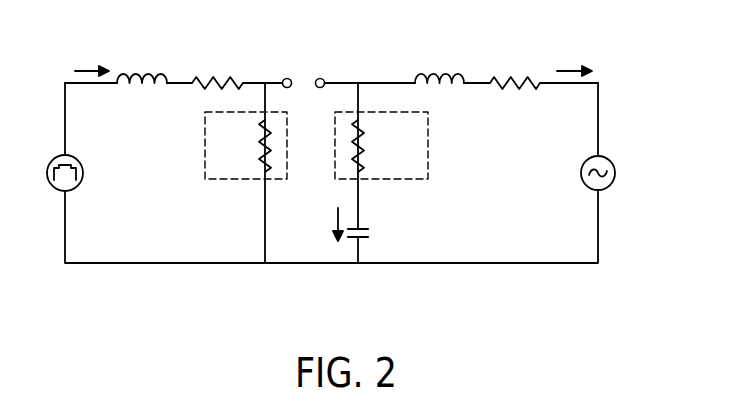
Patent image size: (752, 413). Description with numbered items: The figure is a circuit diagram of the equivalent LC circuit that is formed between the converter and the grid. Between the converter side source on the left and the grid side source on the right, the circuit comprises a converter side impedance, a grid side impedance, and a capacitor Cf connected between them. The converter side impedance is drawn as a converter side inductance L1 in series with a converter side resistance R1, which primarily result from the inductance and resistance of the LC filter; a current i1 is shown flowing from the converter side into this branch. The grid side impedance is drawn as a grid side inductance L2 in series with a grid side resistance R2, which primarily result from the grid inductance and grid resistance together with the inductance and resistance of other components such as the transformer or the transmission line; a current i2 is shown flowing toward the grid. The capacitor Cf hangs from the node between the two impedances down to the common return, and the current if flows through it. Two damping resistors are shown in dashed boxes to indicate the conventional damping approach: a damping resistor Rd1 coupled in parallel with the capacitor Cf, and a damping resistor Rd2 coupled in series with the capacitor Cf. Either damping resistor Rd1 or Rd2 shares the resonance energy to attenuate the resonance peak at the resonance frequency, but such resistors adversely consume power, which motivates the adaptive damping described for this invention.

The converter side inductance L1 is at (142, 64).
The converter side resistance R1 is at (217, 67).
The grid side inductance L2 is at (439, 64).
The grid side resistance R2 is at (515, 67).
The damping resistor Rd2 is at (246, 145).
The damping resistor Rd1 is at (381, 145).
The capacitor Cf is at (371, 239).
The first current i1 is at (90, 59).
The second current i2 is at (574, 57).
The filter current if is at (331, 218).